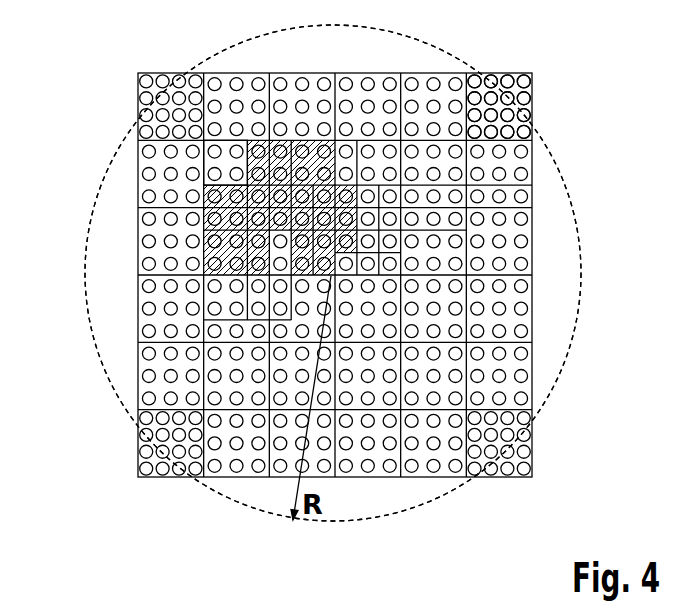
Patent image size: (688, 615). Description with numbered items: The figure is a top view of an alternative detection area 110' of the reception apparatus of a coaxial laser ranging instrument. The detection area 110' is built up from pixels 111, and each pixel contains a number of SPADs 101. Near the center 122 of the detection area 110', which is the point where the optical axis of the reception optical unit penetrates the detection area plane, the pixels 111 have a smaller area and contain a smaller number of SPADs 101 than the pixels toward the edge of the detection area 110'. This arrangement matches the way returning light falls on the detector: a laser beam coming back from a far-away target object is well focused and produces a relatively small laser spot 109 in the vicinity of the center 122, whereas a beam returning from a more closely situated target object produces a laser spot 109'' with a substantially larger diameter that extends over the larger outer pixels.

The SPAD 101 is at (527, 255).
The laser spot 109 is at (145, 148).
The laser spot 109'' is at (366, 273).
The pixel 111 is at (472, 177).
The center 122 is at (330, 278).
The detection area 110' is at (358, 273).